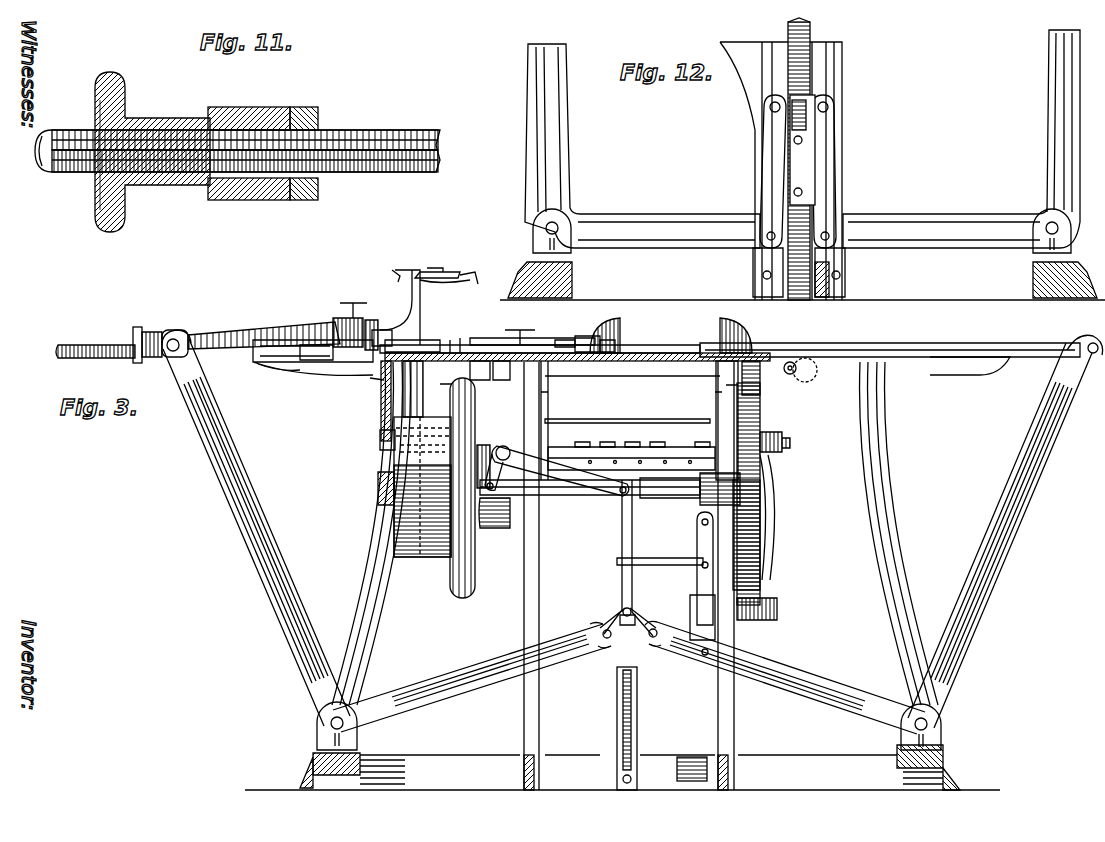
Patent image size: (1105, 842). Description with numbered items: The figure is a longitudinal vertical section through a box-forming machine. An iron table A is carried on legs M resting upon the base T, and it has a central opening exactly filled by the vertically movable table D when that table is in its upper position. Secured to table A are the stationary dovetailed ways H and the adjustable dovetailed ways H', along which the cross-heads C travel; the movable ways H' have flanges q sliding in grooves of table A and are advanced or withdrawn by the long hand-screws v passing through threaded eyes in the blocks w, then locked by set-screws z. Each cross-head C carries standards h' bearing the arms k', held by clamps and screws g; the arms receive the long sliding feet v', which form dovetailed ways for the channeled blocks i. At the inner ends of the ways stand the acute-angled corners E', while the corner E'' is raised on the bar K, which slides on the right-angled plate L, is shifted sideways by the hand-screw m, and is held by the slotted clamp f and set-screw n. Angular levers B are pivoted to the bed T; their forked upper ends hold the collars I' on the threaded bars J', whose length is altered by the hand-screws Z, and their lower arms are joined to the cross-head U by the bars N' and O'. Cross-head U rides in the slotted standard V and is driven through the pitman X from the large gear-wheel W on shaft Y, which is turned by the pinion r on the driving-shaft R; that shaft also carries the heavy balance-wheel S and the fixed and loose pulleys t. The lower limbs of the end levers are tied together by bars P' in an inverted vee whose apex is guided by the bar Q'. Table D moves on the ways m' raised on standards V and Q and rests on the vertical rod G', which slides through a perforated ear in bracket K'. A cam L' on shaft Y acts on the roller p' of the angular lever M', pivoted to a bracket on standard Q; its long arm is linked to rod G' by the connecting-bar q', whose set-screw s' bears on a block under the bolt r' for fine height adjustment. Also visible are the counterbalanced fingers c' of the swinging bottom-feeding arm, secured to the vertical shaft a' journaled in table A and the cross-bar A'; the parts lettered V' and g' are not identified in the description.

In FIG. 11, the threaded bar J' is at (237, 140).
In FIG. 3, the threaded bar J' is at (198, 331).
In FIG. 11, the hand-screw Z is at (156, 120).
In FIG. 3, the hand-screw Z is at (141, 335).
In FIG. 11, the collar I' is at (263, 141).
In FIG. 3, the collar I' is at (174, 333).
In FIG. 12, the angular lever B is at (802, 152).
In FIG. 3, the angular lever B is at (632, 529).
In FIG. 12, the base T is at (802, 253).
In FIG. 3, the base T is at (623, 746).
In FIG. 12, the slotted standard V is at (790, 171).
In FIG. 3, the slotted standard V is at (732, 576).
In FIG. 12, the bar N' is at (801, 196).
In FIG. 12, the bar O' is at (806, 150).
In FIG. 3, the bar O' is at (696, 617).
In FIG. 12, the cross-head U is at (800, 136).
In FIG. 3, the cross-head U is at (699, 568).
In FIG. 3, the leg M is at (635, 533).
In FIG. 3, the cross-head C is at (299, 358).
In FIG. 3, the flange q is at (274, 373).
In FIG. 3, the bracket V' is at (655, 364).
In FIG. 3, the clamp and screw g is at (355, 318).
In FIG. 3, the standard h' is at (400, 307).
In FIG. 3, the channeled block i is at (437, 264).
In FIG. 3, the arm k' is at (449, 267).
In FIG. 3, the hand-screw m is at (382, 335).
In FIG. 3, the adjustable dovetailed way H' is at (412, 338).
In FIG. 3, the right-angled plate L is at (540, 398).
In FIG. 3, the set-screw n is at (532, 327).
In FIG. 3, the slotted clamp f is at (560, 332).
In FIG. 3, the acute-angled corner E'' is at (606, 334).
In FIG. 3, the bar K is at (615, 343).
In FIG. 3, the acute-angled corner E' is at (648, 369).
In FIG. 3, the iron table A is at (575, 397).
In FIG. 3, the stationary dovetailed way H is at (890, 340).
In FIG. 3, the set-screw z is at (583, 387).
In FIG. 3, the block w is at (620, 378).
In FIG. 3, the long hand-screw v is at (655, 378).
In FIG. 3, the way m' is at (631, 396).
In FIG. 3, the counterbalanced pivoted finger c' is at (640, 436).
In FIG. 3, the table D is at (631, 448).
In FIG. 3, the large gear-wheel W is at (737, 483).
In FIG. 3, the pinion r is at (775, 506).
In FIG. 3, the pitman X is at (757, 550).
In FIG. 3, the shaft Y is at (590, 497).
In FIG. 3, the driving-shaft R is at (670, 497).
In FIG. 3, the angular lever M' is at (557, 461).
In FIG. 3, the balance-wheel S is at (462, 488).
In FIG. 3, the fixed and loose pulleys t is at (422, 487).
In FIG. 3, the vertical shaft a' is at (395, 389).
In FIG. 3, the sliding foot v' is at (371, 386).
In FIG. 3, the block g' is at (377, 439).
In FIG. 3, the cross-bar A' is at (371, 488).
In FIG. 3, the cam L' is at (487, 498).
In FIG. 3, the roller p' is at (500, 512).
In FIG. 3, the standard Q is at (535, 576).
In FIG. 3, the connecting-bar q' is at (616, 546).
In FIG. 3, the bar Q' is at (660, 552).
In FIG. 3, the bar P' is at (629, 606).
In FIG. 3, the bolt r' is at (615, 608).
In FIG. 3, the set-screw s' is at (631, 623).
In FIG. 3, the vertical rod G' is at (629, 677).
In FIG. 3, the bracket K' is at (651, 728).